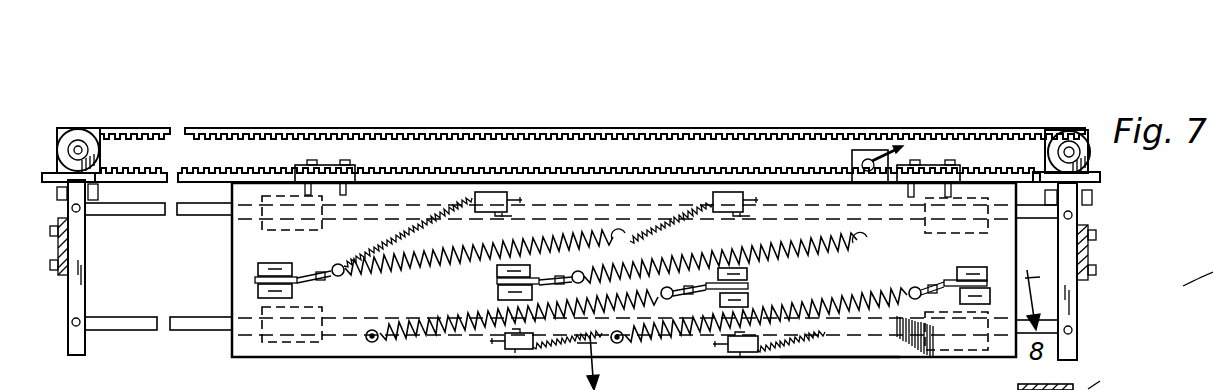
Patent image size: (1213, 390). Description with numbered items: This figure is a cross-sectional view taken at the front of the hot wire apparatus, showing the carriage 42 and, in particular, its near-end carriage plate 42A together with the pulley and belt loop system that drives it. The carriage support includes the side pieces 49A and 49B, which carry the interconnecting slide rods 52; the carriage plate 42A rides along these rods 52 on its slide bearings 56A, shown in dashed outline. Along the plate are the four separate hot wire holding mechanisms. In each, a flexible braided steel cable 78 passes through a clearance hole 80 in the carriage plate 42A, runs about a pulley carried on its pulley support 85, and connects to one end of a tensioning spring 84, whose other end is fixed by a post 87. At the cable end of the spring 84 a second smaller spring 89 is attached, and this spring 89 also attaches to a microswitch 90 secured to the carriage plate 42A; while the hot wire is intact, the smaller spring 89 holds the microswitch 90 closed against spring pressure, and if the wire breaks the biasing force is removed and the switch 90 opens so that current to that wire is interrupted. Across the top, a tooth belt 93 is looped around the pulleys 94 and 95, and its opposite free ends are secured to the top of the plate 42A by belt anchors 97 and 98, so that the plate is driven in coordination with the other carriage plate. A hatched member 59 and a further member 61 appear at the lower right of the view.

The carriage 42 is at (428, 349).
The carriage plate 42A is at (840, 353).
The side piece 49A is at (68, 292).
The side piece 49B is at (1078, 309).
The interconnecting rods 52 is at (128, 215).
The slide bearings 56A is at (263, 197).
The hatched member 59 is at (1027, 383).
The member 61 is at (1106, 381).
The flexible braided steel cable 78 is at (302, 276).
The clearance hole 80 is at (256, 281).
The tensioning spring 84 is at (803, 240).
The pulley support 85 is at (258, 272).
The post 87 is at (372, 343).
The second smaller spring 89 is at (434, 212).
The microswitch 90 is at (495, 192).
The tooth belt 93 is at (170, 128).
The pulley 94 is at (63, 150).
The pulley 95 is at (1088, 152).
The belt anchor 97 is at (356, 163).
The belt anchor 98 is at (960, 167).